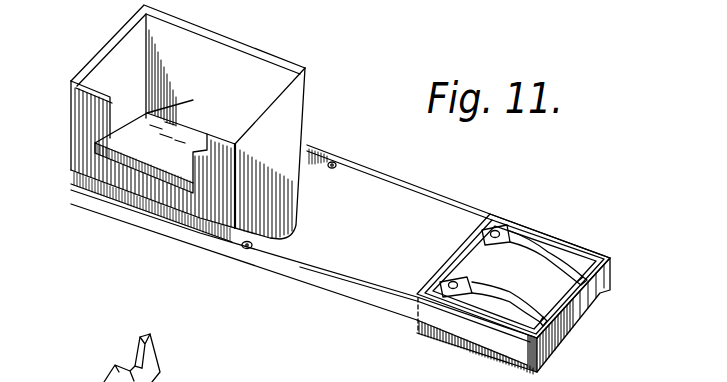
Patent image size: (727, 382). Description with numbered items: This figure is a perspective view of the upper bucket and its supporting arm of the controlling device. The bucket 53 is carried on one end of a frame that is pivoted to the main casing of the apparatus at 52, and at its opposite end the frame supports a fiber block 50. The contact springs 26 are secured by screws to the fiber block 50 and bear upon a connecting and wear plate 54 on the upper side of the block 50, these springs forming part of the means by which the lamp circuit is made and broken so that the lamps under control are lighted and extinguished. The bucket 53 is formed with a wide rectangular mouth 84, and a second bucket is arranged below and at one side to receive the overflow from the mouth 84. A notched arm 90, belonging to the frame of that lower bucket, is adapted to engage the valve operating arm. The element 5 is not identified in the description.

The base plate 5 is at (380, 296).
The contact springs 26 is at (562, 258).
The fiber block 50 is at (569, 334).
The pivot 52 is at (334, 166).
The bucket 53 is at (195, 120).
The connecting and wear plate 54 is at (538, 290).
The mouth 84 is at (133, 145).
The notched arm 90 is at (145, 360).